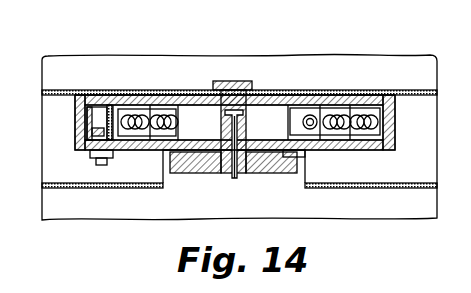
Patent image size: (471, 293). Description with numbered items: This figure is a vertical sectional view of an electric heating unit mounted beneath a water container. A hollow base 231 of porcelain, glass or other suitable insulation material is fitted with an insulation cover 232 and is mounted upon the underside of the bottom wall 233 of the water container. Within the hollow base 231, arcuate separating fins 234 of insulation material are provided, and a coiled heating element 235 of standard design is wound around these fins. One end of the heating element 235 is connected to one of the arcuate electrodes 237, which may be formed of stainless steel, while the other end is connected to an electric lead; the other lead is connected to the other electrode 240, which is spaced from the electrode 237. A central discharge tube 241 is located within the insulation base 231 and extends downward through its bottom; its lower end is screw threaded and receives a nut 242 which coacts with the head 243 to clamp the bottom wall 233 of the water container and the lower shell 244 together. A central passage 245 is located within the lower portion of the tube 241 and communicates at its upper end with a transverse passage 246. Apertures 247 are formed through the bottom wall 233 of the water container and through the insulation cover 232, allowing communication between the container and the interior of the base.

The base 231 is at (372, 149).
The insulation cover 232 is at (299, 95).
The bottom wall 233 is at (60, 92).
The arcuate separating fins 234 is at (183, 107).
The coiled heating element 235 is at (333, 106).
The arcuate electrode 237 is at (88, 115).
The electrode 240 is at (107, 124).
The central discharge tube 241 is at (318, 132).
The nut 242 is at (205, 172).
The head 243 is at (250, 93).
The lower shell 244 is at (100, 186).
The central passage 245 is at (237, 176).
The transverse passage 246 is at (100, 113).
The apertures 247 is at (304, 91).